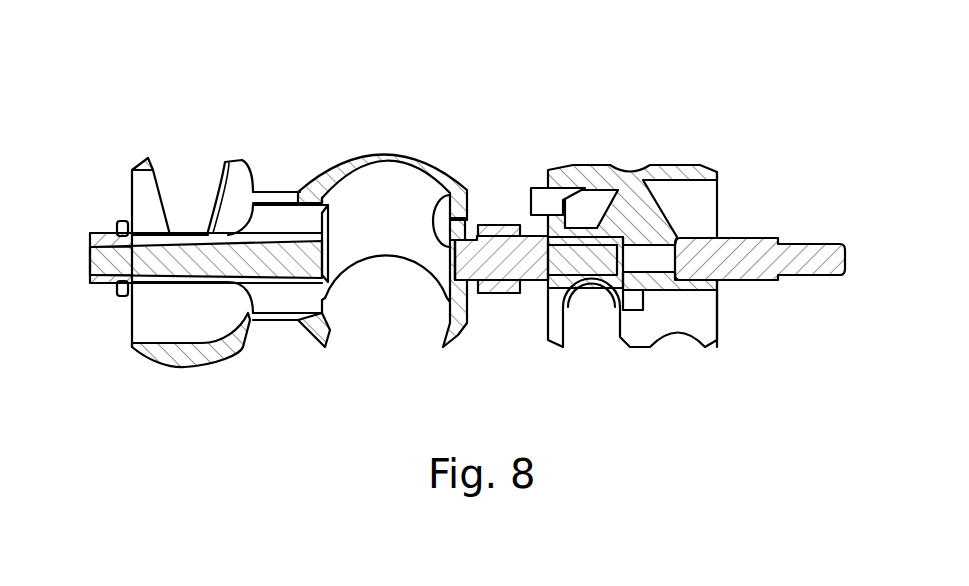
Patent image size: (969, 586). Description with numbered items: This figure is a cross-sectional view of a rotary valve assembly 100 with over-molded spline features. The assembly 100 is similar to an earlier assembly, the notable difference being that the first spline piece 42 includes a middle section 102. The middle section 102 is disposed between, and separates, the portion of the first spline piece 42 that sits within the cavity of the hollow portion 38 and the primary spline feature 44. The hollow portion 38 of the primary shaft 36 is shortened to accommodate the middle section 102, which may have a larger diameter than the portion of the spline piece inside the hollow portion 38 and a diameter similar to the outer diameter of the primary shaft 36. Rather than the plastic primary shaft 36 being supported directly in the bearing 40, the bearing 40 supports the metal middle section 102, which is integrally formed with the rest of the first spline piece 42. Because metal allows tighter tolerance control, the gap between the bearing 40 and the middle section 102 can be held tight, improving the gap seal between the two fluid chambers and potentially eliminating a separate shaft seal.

The rotary valve assembly 100 is at (386, 113).
The middle section 102 is at (495, 252).
The first spline piece 42 is at (462, 235).
The primary shaft 36 is at (460, 265).
The hollow portion 38 is at (472, 283).
The bearing 40 is at (498, 285).
The primary spline feature 44 is at (572, 298).